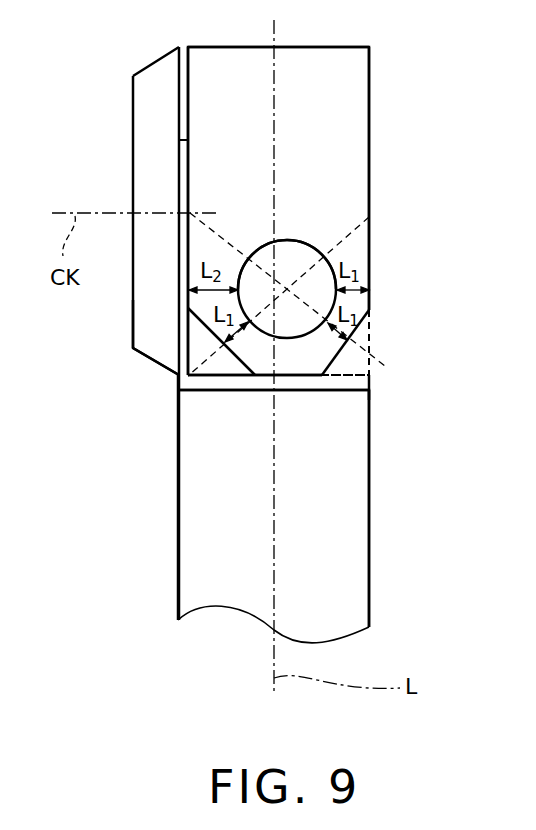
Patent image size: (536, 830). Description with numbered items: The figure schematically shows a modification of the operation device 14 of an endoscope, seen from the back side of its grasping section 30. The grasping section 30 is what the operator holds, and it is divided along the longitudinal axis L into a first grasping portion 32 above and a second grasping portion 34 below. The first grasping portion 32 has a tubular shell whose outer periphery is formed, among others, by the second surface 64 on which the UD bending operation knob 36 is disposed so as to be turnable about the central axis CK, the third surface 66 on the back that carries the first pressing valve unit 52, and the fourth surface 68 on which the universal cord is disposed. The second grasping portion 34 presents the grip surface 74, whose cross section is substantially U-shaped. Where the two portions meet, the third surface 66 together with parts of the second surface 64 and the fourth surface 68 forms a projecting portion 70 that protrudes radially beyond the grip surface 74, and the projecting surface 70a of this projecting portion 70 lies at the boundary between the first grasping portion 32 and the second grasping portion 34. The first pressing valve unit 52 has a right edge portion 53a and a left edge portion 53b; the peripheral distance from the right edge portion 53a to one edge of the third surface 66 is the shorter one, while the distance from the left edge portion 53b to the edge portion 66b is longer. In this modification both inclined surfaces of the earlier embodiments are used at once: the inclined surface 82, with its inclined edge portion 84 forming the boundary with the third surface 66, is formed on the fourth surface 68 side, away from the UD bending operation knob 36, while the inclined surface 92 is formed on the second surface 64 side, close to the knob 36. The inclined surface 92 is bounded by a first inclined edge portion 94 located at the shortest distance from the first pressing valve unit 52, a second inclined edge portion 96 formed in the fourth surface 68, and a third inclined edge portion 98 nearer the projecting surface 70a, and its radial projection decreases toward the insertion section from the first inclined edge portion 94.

The operation device 14 is at (84, 484).
The grasping section 30 is at (392, 393).
The first grasping portion 32 is at (350, 70).
The second grasping portion 34 is at (352, 562).
The UD bending operation knob 36 is at (133, 163).
The first pressing valve unit 52 is at (298, 258).
The right edge portion 53a is at (337, 296).
The left edge portion 53b is at (240, 283).
The second surface 64 is at (188, 108).
The third surface 66 is at (357, 148).
The edge portion 66b is at (188, 258).
The fourth surface 68 is at (371, 101).
The projecting portion 70 is at (298, 387).
The projecting surface 70a is at (243, 392).
The grip surface 74 is at (347, 508).
The inclined surface 82 is at (348, 352).
The inclined edge portion 84 is at (340, 355).
The inclined surface 92 is at (188, 352).
The first inclined edge portion 94 is at (217, 363).
The second inclined edge portion 96 is at (167, 348).
The third inclined edge portion 98 is at (227, 377).